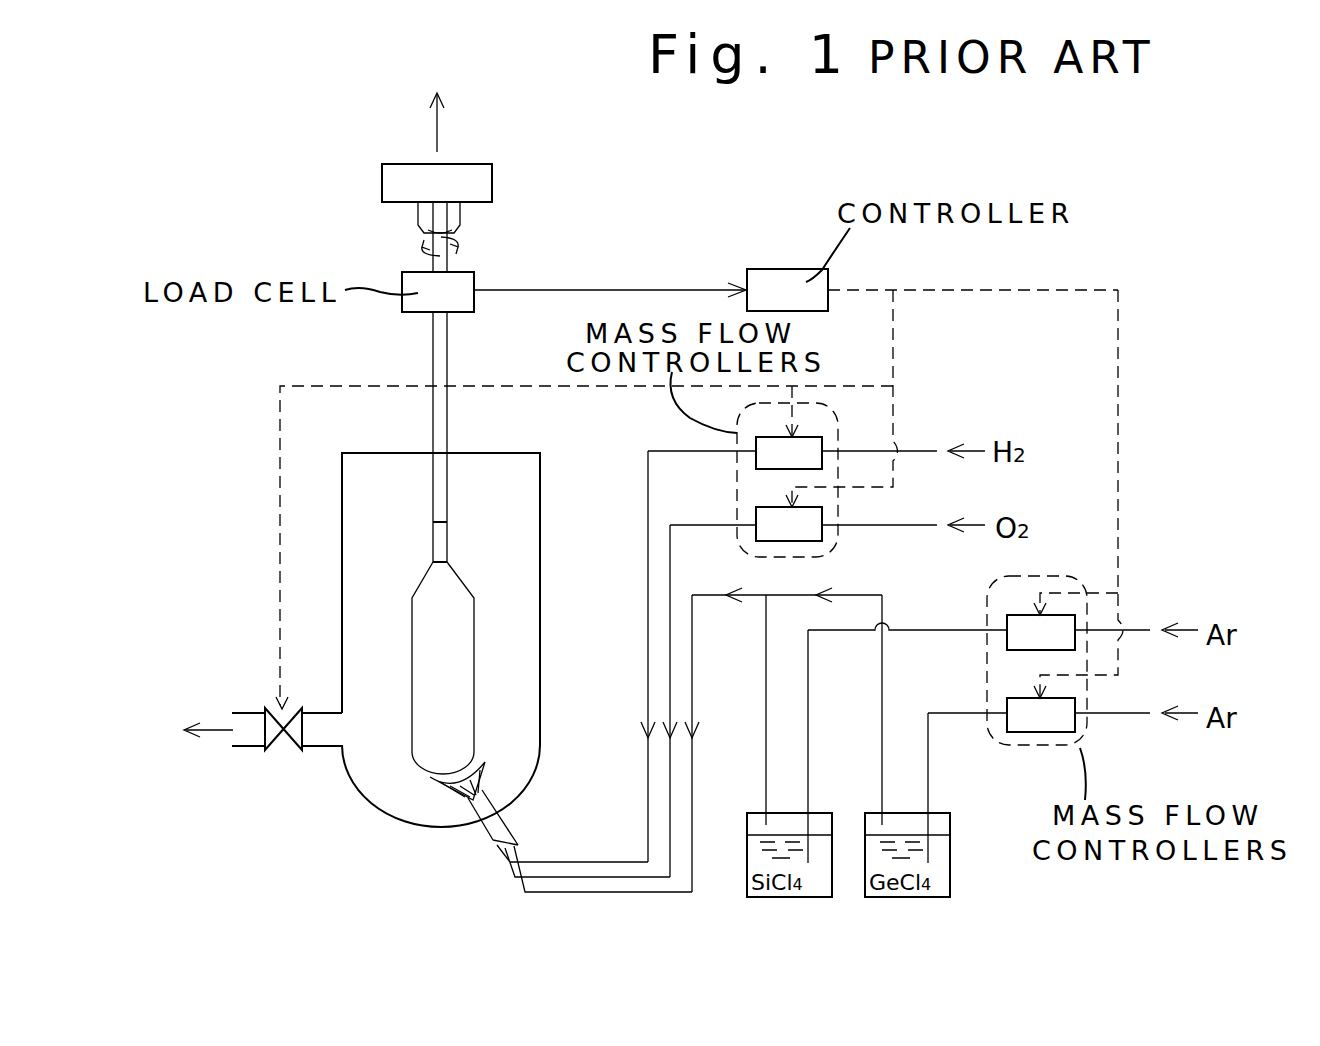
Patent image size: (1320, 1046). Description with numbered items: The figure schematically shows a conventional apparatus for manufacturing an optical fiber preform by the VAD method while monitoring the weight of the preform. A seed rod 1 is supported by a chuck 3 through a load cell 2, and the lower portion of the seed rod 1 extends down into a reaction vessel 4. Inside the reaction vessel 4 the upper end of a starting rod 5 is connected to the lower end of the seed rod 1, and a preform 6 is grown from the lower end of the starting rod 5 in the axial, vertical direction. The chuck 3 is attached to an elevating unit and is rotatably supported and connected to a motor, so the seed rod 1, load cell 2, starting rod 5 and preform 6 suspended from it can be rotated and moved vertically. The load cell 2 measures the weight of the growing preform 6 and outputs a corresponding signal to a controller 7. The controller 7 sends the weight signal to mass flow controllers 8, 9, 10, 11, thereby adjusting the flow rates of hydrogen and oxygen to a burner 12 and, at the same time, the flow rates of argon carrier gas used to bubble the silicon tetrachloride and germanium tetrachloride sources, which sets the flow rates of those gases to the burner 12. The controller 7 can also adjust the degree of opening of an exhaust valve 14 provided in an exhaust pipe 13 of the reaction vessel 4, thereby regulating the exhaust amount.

The seed rod 1 is at (448, 370).
The load cell 2 is at (477, 277).
The chuck 3 is at (493, 178).
The reaction vessel 4 is at (541, 600).
The starting rod 5 is at (443, 548).
The preform 6 is at (463, 742).
The controller 7 is at (782, 269).
The mass flow controller 8 is at (820, 434).
The mass flow controller 9 is at (825, 541).
The mass flow controller 10 is at (1007, 618).
The mass flow controller 11 is at (1007, 700).
The burner 12 is at (492, 840).
The exhaust pipe 13 is at (324, 748).
The exhaust valve 14 is at (286, 750).